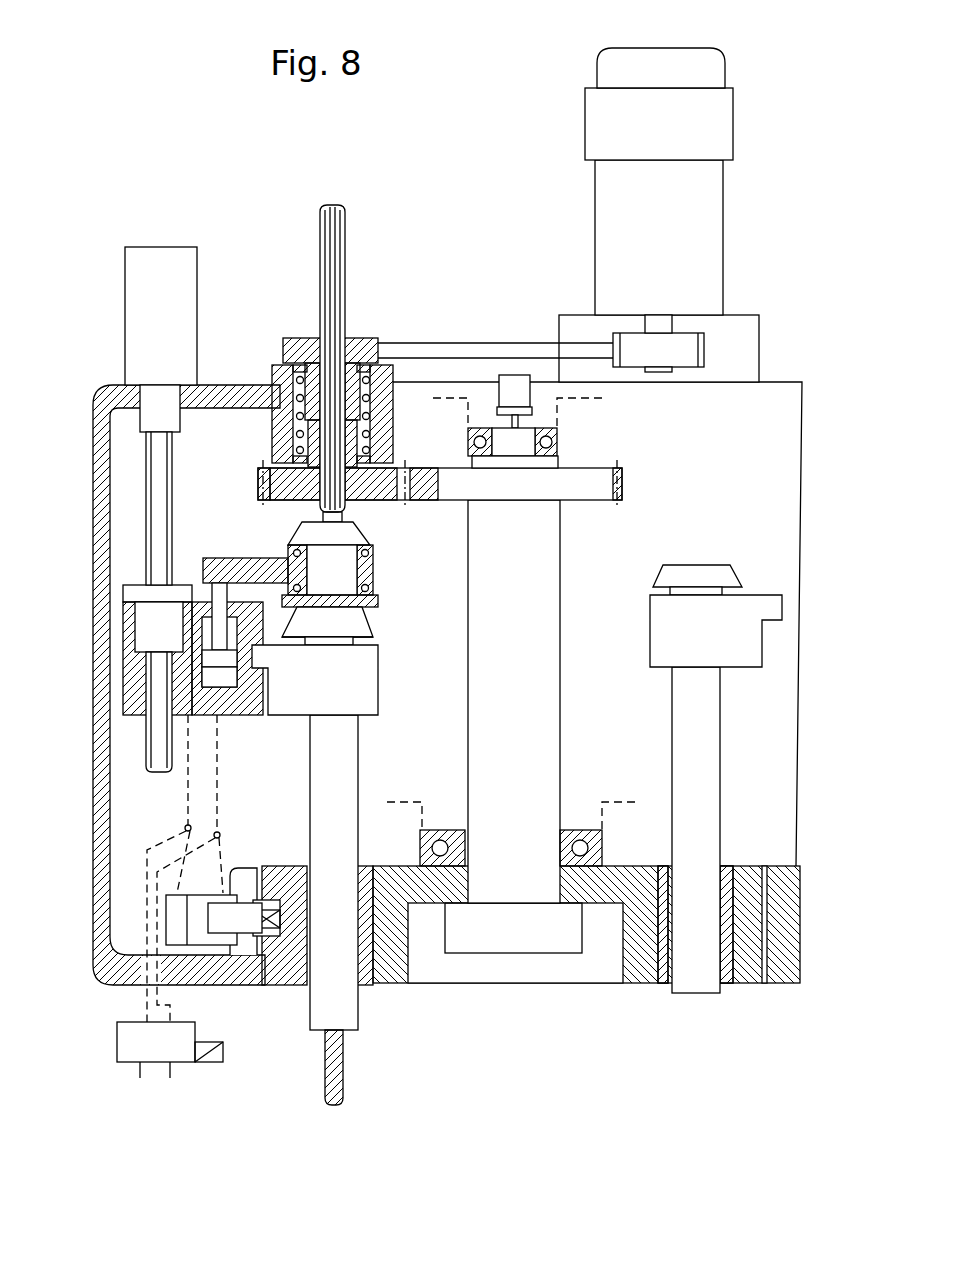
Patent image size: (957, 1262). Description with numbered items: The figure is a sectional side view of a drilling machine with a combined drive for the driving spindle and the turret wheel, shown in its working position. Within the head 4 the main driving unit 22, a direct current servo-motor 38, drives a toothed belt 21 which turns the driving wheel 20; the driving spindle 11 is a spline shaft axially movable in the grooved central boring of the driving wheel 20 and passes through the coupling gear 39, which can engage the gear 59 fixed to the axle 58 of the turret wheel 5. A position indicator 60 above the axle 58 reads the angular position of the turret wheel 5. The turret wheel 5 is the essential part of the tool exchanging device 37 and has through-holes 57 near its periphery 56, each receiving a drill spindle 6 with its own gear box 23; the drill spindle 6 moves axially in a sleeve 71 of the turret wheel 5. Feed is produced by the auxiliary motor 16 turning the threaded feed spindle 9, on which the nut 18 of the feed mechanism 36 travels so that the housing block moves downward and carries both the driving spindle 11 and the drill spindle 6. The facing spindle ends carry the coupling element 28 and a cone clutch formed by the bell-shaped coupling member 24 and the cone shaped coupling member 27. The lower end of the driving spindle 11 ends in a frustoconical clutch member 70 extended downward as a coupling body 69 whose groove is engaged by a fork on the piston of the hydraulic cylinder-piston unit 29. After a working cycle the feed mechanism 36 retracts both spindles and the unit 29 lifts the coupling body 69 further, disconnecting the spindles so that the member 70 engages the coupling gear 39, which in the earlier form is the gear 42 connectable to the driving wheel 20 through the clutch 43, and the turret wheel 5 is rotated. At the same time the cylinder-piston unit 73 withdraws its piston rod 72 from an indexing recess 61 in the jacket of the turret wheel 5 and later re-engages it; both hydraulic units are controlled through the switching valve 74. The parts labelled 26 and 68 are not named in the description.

The head 4 is at (238, 380).
The turret wheel 5 is at (638, 960).
The drill spindle 6 is at (340, 775).
The feed spindle 9 is at (160, 740).
The driving spindle 11 is at (349, 290).
The auxiliary direct current motor 16 is at (162, 285).
The nut 18 is at (157, 630).
The driving wheel 20 is at (305, 340).
The toothed belt 21 is at (470, 350).
The main driving unit 22 is at (607, 208).
The gear box 23 is at (360, 695).
The bell-shaped coupling member 24 is at (372, 610).
The nut 26 is at (358, 690).
The cone shaped coupling member 27 is at (322, 636).
The coupling element 28 is at (362, 622).
The cylinder-piston unit 29 is at (210, 684).
The feed mechanism 36 is at (133, 502).
The tool exchanging device 37 is at (503, 1003).
The direct current servo-motor 38 is at (618, 70).
The coupling gear 39 is at (247, 487).
The gear 42 is at (395, 465).
The clutch 43 is at (385, 576).
The periphery 56 is at (763, 940).
The through-hole 57 is at (667, 967).
The axle 58 is at (543, 765).
The gear 59 is at (587, 490).
The position indicator 60 is at (512, 388).
The indexing recess 61 is at (285, 866).
The pivot bearing 68 is at (535, 519).
The coupling body 69 is at (288, 557).
The frustoconical clutch member 70 is at (356, 528).
The sleeve 71 is at (368, 965).
The piston rod 72 is at (243, 920).
The cylinder-piston unit 73 is at (200, 935).
The switching valve 74 is at (180, 1040).